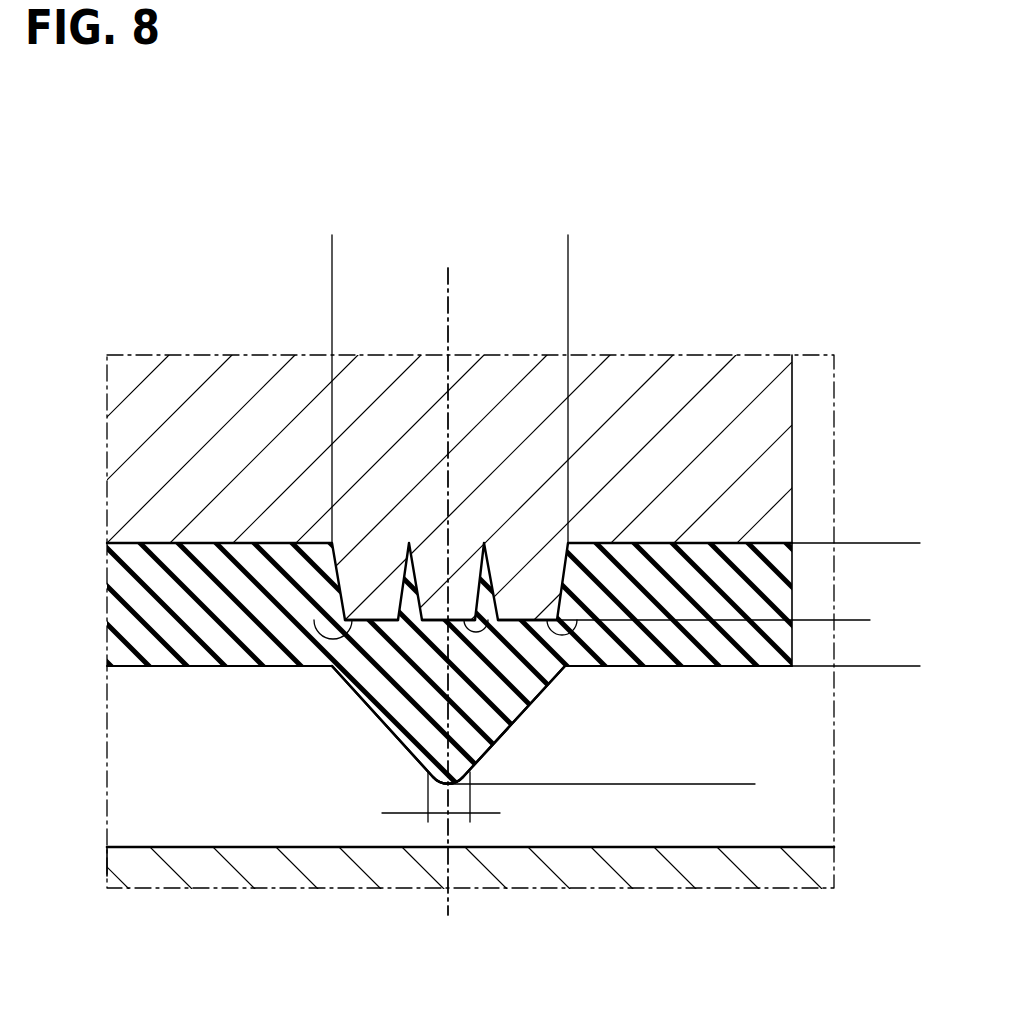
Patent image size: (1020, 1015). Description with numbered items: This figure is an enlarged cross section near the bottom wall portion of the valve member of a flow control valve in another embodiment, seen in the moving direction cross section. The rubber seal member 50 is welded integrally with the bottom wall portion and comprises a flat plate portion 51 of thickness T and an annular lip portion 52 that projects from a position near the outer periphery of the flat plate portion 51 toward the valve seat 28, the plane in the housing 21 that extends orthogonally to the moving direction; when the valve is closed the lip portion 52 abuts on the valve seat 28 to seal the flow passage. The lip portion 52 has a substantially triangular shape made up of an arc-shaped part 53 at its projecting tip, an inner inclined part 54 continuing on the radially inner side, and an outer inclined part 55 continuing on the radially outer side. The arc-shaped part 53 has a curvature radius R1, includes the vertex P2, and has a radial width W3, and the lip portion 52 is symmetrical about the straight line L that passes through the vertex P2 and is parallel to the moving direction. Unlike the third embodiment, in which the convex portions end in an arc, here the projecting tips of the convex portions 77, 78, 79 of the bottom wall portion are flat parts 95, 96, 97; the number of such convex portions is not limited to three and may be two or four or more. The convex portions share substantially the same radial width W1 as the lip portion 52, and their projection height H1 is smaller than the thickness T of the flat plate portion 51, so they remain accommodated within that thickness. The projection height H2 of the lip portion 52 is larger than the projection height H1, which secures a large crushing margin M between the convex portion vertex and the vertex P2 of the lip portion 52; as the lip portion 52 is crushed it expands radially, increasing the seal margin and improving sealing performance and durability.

The housing 21 is at (158, 868).
The valve seat 28 is at (780, 847).
The rubber seal member 50 is at (155, 667).
The flat plate portion 51 is at (262, 652).
The lip portion 52 is at (405, 722).
The arc-shaped part 53 is at (443, 785).
The inner inclined part 54 is at (375, 712).
The outer inclined part 55 is at (520, 722).
The convex portion 77 is at (530, 605).
The convex portion 78 is at (437, 605).
The convex portion 79 is at (374, 605).
The flat part 95 is at (560, 625).
The flat part 96 is at (482, 625).
The flat part 97 is at (336, 625).
The radial width W1 is at (332, 252).
The straight line L is at (452, 283).
The projection height H1 is at (851, 543).
The thickness T is at (904, 543).
The crushing margin M is at (672, 620).
The projection height H2 is at (726, 666).
The curvature radius R1 is at (433, 757).
The vertex P2 is at (382, 813).
The radial width W3 is at (460, 815).